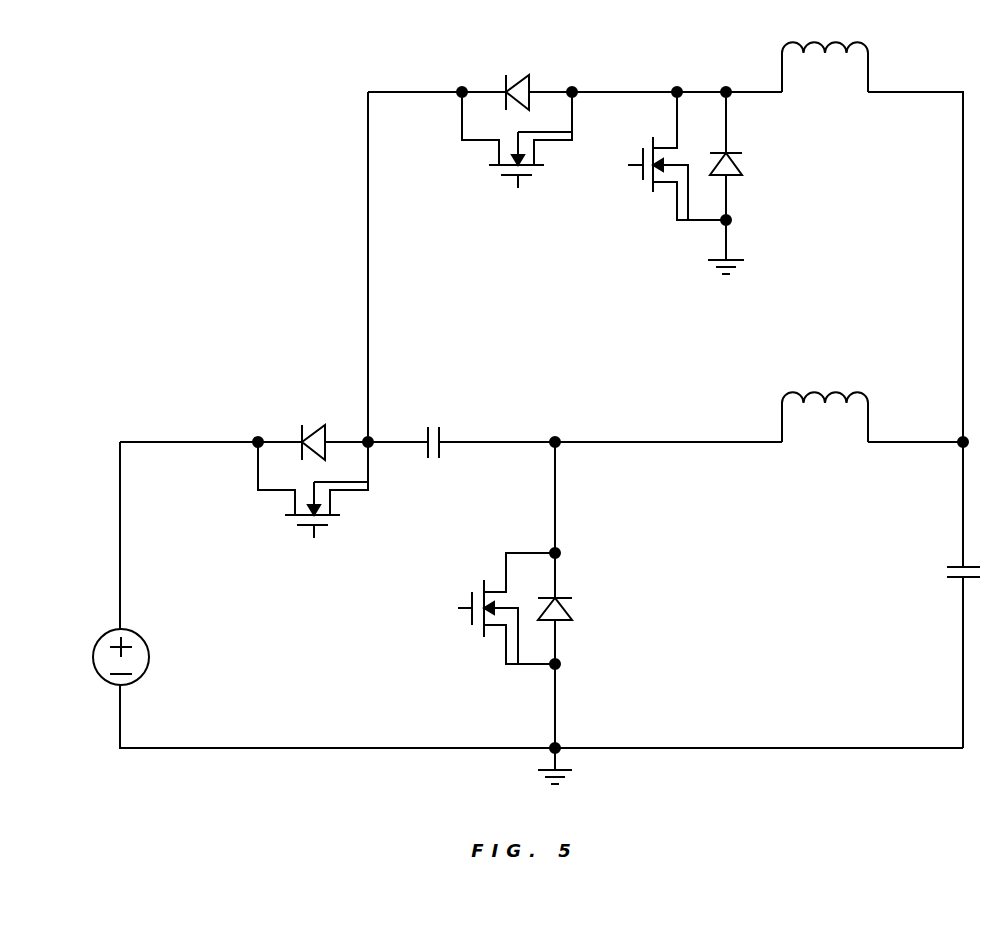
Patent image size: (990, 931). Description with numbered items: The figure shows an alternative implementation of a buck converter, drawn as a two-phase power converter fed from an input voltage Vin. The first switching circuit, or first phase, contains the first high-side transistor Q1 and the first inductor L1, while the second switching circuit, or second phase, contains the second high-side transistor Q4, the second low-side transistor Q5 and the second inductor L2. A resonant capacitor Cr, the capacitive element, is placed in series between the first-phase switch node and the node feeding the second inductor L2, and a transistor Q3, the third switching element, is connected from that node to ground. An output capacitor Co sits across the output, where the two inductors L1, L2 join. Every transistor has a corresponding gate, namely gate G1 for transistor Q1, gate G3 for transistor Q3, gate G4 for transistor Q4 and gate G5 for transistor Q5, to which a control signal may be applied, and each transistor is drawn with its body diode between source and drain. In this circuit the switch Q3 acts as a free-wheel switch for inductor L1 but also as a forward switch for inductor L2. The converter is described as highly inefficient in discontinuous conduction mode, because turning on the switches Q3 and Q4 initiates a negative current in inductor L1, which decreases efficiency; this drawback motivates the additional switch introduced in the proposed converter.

The first high-side transistor Q1 is at (313, 461).
The gate G1 is at (312, 548).
The transistor Q3 is at (545, 595).
The gate G3 is at (449, 608).
The second high-side transistor Q4 is at (517, 111).
The gate G4 is at (516, 199).
The second low-side transistor Q5 is at (713, 180).
The gate G5 is at (619, 164).
The first inductor L1 is at (825, 52).
The second inductor L2 is at (825, 402).
The resonant capacitor Cr is at (433, 429).
The output capacitor Co is at (953, 559).
The input voltage Vin is at (146, 657).